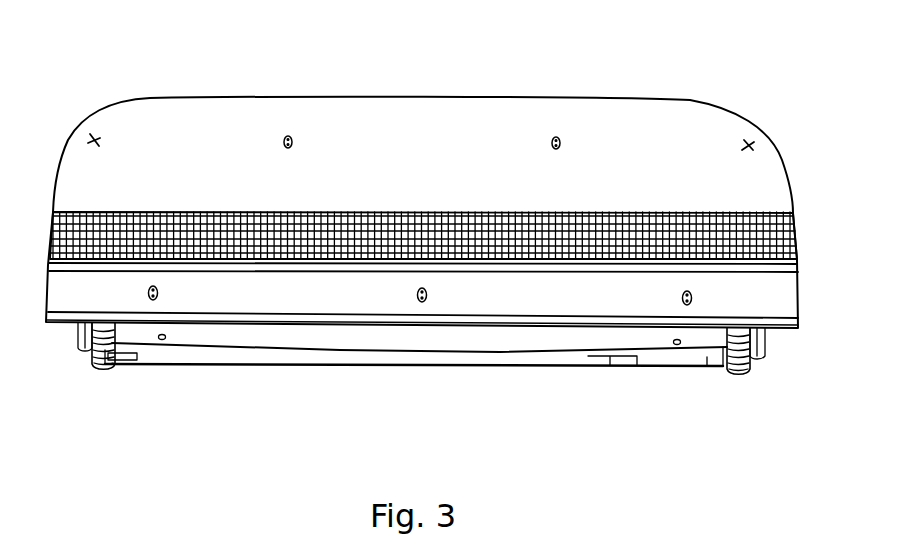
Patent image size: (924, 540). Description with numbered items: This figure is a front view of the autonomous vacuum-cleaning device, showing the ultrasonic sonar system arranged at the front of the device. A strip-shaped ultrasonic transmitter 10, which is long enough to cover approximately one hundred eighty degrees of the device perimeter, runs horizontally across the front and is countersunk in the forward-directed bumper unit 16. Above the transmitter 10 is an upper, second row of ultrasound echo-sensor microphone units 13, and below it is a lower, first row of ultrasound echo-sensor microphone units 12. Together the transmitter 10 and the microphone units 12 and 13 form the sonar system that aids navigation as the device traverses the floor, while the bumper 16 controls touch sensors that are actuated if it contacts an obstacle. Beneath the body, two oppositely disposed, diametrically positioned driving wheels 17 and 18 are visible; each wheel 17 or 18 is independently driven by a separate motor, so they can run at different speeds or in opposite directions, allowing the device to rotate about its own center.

The ultrasonic transmitter 10 is at (797, 243).
The ultrasound echo-sensor microphone units 12 is at (160, 297).
The ultrasound echo-sensor microphone units 13 is at (93, 138).
The bumper unit 16 is at (440, 137).
The wheel 17 is at (112, 366).
The wheel 18 is at (727, 373).